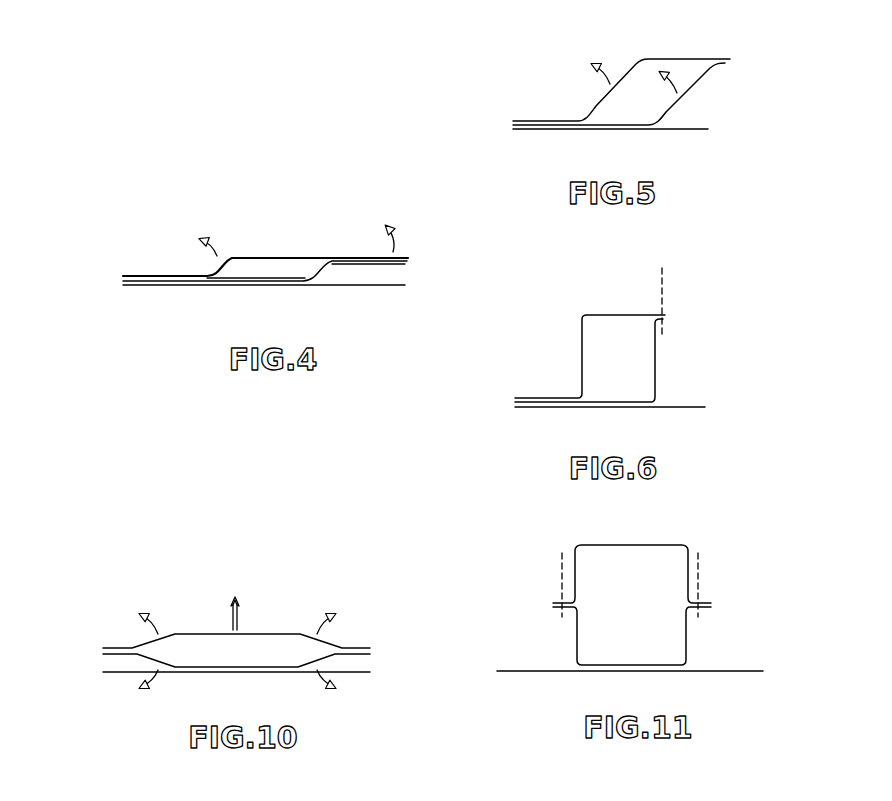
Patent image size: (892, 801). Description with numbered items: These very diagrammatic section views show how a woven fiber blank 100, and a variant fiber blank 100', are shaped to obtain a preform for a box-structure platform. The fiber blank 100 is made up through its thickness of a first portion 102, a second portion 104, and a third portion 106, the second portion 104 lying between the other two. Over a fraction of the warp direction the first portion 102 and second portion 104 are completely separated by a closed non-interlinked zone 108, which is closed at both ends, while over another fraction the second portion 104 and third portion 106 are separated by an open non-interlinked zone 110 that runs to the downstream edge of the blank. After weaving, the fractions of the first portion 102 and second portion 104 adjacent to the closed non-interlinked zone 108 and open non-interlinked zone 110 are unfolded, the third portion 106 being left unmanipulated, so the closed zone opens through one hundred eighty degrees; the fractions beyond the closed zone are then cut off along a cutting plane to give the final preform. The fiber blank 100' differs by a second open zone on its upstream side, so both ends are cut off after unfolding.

In FIG. 4, the fiber blank 100 is at (297, 221).
In FIG. 10, the fiber blank 100' is at (237, 616).
In FIG. 4, the first portion 102 is at (123, 276).
In FIG. 5, the first portion 102 is at (730, 59).
In FIG. 6, the first portion 102 is at (665, 315).
In FIG. 10, the first portion 102 is at (103, 648).
In FIG. 11, the first portion 102 is at (553, 602).
In FIG. 4, the second portion 104 is at (123, 281).
In FIG. 5, the second portion 104 is at (728, 63).
In FIG. 6, the second portion 104 is at (665, 320).
In FIG. 10, the second portion 104 is at (103, 654).
In FIG. 11, the second portion 104 is at (553, 607).
In FIG. 4, the third portion 106 is at (123, 286).
In FIG. 5, the third portion 106 is at (708, 129).
In FIG. 6, the third portion 106 is at (705, 407).
In FIG. 10, the third portion 106 is at (103, 673).
In FIG. 11, the third portion 106 is at (763, 671).
In FIG. 4, the closed non-interlinked zone 108 is at (258, 269).
In FIG. 5, the closed non-interlinked zone 108 is at (647, 108).
In FIG. 10, the closed non-interlinked zone 108 is at (247, 660).
In FIG. 4, the open non-interlinked zone 110 is at (348, 270).
In FIG. 5, the open non-interlinked zone 110 is at (725, 112).
In FIG. 10, the open non-interlinked zone 110 is at (117, 666).